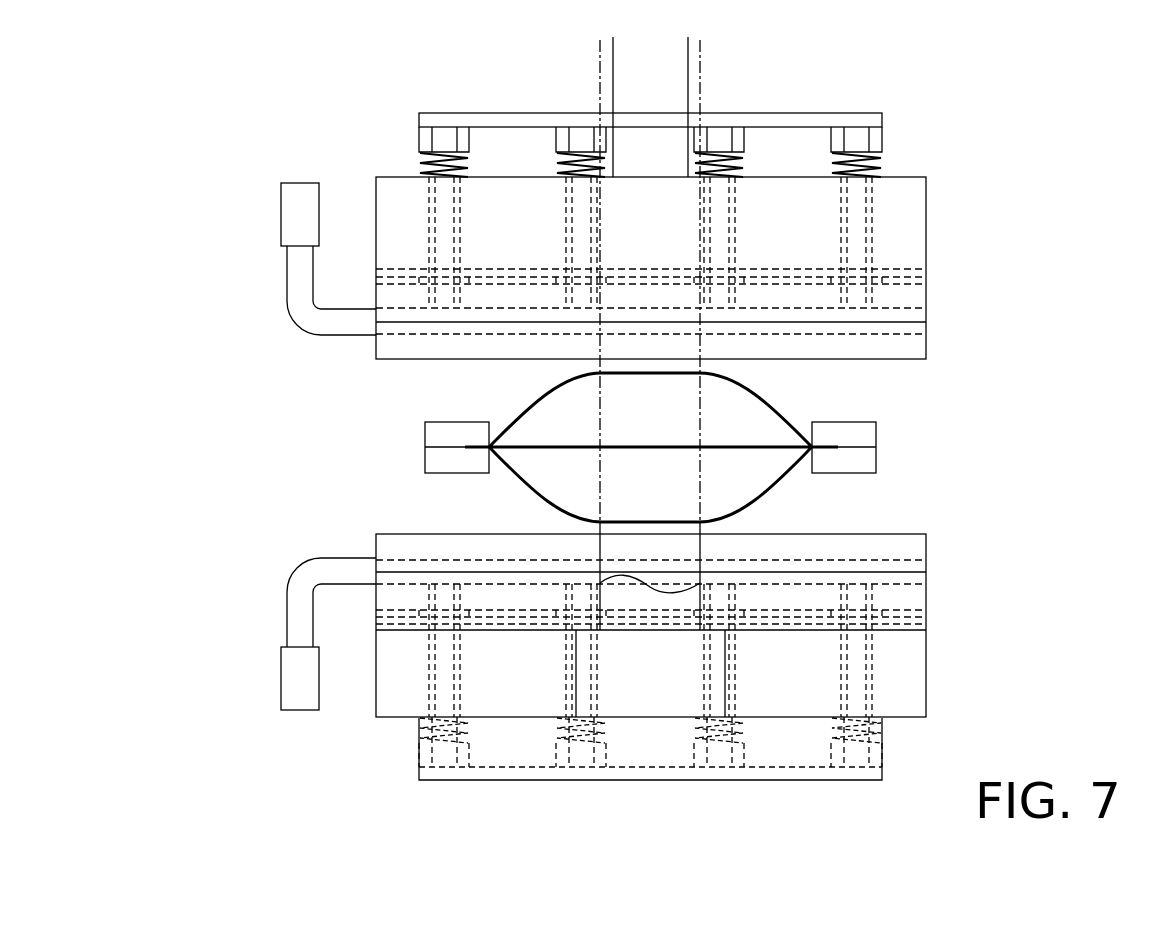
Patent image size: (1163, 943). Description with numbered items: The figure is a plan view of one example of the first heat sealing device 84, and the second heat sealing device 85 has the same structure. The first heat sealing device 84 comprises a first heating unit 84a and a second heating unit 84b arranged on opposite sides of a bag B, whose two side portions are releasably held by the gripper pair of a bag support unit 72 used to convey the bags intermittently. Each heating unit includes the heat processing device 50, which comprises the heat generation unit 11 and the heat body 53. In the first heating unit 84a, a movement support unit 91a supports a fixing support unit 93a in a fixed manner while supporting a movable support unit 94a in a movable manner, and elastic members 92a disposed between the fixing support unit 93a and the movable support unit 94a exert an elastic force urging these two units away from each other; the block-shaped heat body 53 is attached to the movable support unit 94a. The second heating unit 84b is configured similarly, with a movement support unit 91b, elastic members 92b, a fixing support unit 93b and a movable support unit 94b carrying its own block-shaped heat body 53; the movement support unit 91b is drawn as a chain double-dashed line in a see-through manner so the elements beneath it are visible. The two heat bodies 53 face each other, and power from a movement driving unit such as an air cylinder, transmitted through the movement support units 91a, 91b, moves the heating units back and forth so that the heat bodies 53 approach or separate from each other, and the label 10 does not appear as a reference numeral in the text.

The optical fiber connector 10 is at (270, 188).
The heat processing device 50 is at (248, 452).
The heat generation unit 11 is at (915, 316).
The heat body 53 is at (912, 348).
The bag support unit 72 is at (433, 461).
The first heat sealing device 84 is at (1043, 108).
The second heat sealing device 85 is at (769, 439).
The first heating unit 84a is at (943, 213).
The second heating unit 84b is at (943, 685).
The movement support unit 91a is at (672, 59).
The movement support unit 91b is at (690, 366).
The elastic members 92a is at (880, 160).
The elastic members 92b is at (882, 735).
The fixing support unit 93a is at (818, 121).
The fixing support unit 93b is at (820, 779).
The movable support unit 94a is at (910, 245).
The movable support unit 94b is at (912, 652).
The bag B is at (755, 489).